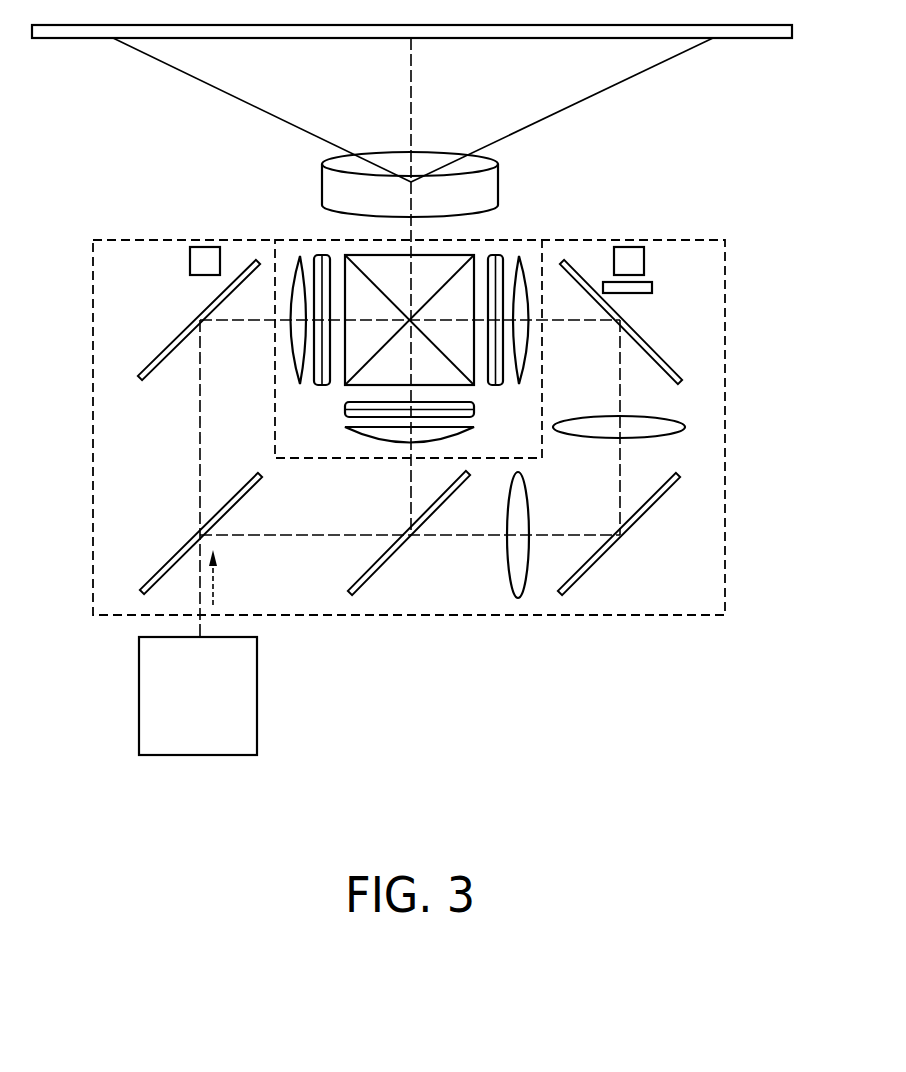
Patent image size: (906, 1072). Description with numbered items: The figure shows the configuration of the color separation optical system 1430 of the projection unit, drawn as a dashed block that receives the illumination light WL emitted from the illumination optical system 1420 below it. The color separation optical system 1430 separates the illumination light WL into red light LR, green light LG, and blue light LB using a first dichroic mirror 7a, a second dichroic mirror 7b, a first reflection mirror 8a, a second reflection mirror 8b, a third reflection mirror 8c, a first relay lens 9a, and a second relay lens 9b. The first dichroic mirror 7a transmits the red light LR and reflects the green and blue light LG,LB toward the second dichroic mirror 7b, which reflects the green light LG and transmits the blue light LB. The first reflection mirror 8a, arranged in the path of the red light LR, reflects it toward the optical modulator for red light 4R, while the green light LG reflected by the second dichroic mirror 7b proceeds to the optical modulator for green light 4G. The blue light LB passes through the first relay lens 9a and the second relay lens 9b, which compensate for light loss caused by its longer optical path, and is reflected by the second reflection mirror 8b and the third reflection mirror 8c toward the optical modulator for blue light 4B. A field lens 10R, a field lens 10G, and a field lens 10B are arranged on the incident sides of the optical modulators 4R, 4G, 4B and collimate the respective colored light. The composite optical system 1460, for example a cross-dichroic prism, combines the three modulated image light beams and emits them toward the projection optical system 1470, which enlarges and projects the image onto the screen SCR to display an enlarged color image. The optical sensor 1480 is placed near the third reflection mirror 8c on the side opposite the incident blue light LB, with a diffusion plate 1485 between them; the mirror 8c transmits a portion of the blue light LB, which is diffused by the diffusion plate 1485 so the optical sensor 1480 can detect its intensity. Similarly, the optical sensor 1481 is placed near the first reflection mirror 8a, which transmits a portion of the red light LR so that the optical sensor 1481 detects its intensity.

The screen SCR is at (757, 40).
The projection optical system 1470 is at (320, 180).
The color separation optical system 1430 is at (93, 414).
The optical sensor 1481 is at (203, 247).
The optical sensor 1480 is at (628, 247).
The diffusion plate 1485 is at (655, 284).
The illumination optical system 1420 is at (258, 708).
The composite optical system 1460 is at (450, 245).
The optical modulator for red light 4R is at (323, 256).
The optical modulator for green light 4G is at (345, 406).
The optical modulator for blue light 4B is at (496, 256).
The field lens 10R is at (300, 256).
The field lens 10G is at (345, 432).
The field lens 10B is at (522, 256).
The first dichroic mirror 7a is at (173, 555).
The second dichroic mirror 7b is at (401, 550).
The first reflection mirror 8a is at (184, 333).
The second reflection mirror 8b is at (593, 567).
The third reflection mirror 8c is at (648, 341).
The first relay lens 9a is at (508, 577).
The second relay lens 9b is at (707, 413).
The red light LR is at (198, 465).
The green light LG is at (408, 497).
The blue light LB is at (619, 497).
The green light and blue light LG,LB is at (252, 537).
The illumination light WL is at (214, 597).